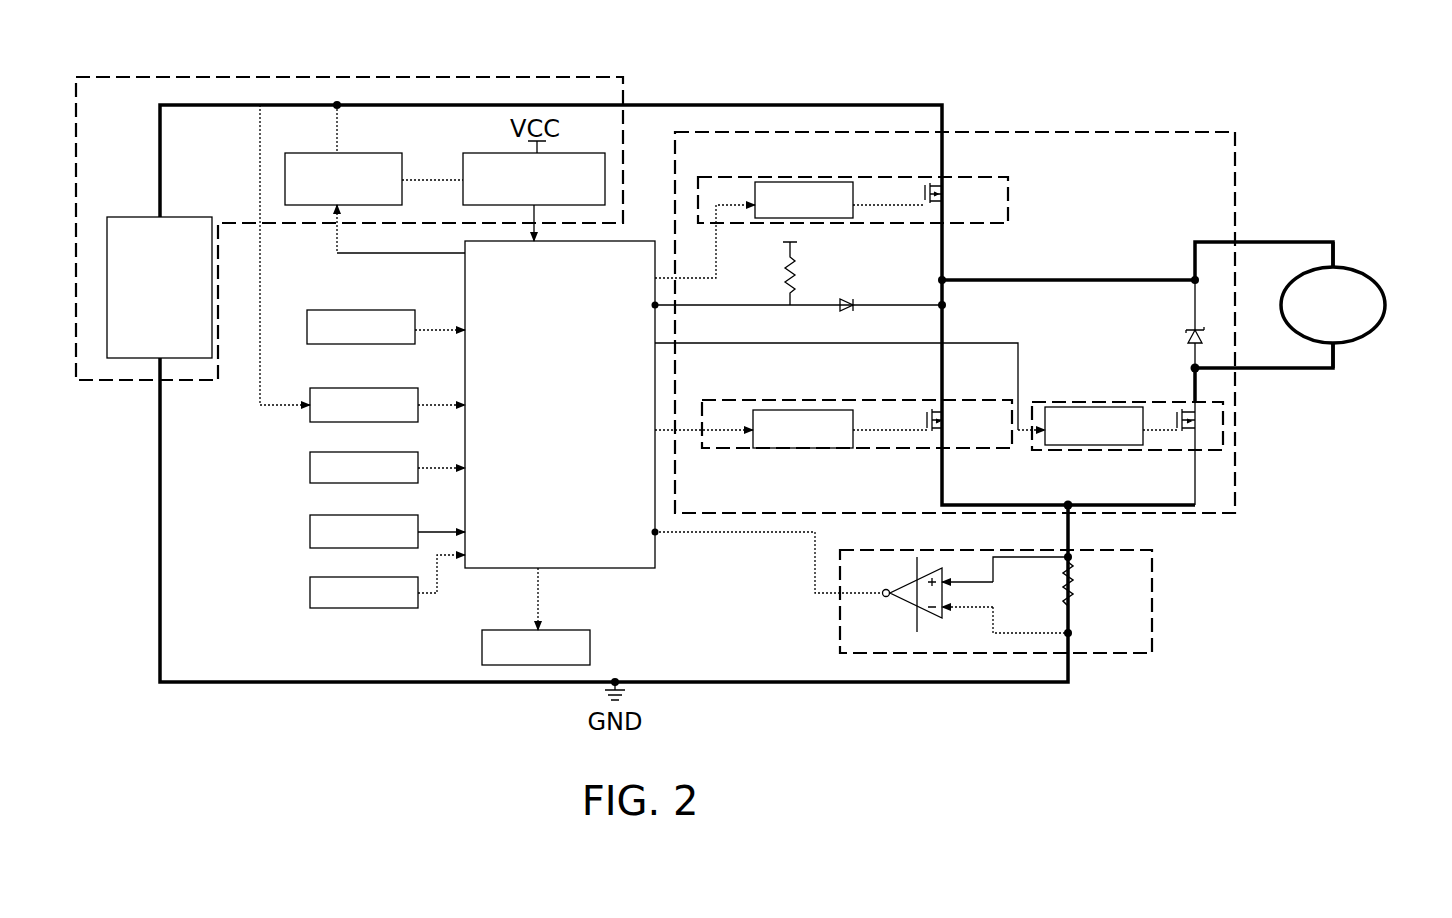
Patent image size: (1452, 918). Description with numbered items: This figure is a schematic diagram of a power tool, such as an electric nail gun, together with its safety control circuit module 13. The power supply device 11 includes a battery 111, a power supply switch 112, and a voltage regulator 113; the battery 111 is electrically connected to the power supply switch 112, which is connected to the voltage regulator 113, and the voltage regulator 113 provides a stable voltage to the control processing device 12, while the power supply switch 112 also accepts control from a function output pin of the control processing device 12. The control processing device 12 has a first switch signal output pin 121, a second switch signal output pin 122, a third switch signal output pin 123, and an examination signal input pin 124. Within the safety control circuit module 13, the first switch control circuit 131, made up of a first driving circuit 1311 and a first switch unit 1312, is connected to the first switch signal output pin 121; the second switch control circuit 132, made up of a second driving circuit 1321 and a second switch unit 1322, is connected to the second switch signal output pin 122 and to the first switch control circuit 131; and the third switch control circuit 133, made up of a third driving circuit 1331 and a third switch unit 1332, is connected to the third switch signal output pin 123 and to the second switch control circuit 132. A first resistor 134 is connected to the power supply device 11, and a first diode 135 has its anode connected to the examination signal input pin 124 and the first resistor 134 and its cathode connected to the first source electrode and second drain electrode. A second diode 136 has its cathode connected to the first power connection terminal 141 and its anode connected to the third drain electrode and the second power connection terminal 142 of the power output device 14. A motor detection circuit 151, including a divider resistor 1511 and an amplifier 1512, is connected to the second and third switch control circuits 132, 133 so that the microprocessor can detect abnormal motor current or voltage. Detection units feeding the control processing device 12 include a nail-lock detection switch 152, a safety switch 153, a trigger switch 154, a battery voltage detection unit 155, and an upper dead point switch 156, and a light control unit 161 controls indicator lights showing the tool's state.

The power supply device 11 is at (237, 75).
The battery 111 is at (159, 287).
The power supply switch 112 is at (343, 179).
The voltage regulator 113 is at (534, 179).
The control processing device 12 is at (560, 404).
The first switch signal output pin 121 is at (681, 247).
The second switch signal output pin 122 is at (680, 430).
The third switch signal output pin 123 is at (826, 381).
The examination signal input pin 124 is at (775, 306).
The safety control circuit module 13 is at (1025, 130).
The first switch control circuit 131 is at (1010, 197).
The first driving circuit 1311 is at (840, 200).
The first switch unit 1312 is at (950, 180).
The second switch control circuit 132 is at (780, 400).
The second driving circuit 1321 is at (840, 429).
The second switch unit 1322 is at (940, 405).
The third switch control circuit 133 is at (1055, 400).
The third driving circuit 1331 is at (1111, 426).
The third switch unit 1332 is at (1228, 403).
The first resistor 134 is at (800, 262).
The first diode 135 is at (852, 300).
The second diode 136 is at (1187, 336).
The power output device 14 is at (1333, 305).
The first power connection terminal 141 is at (1336, 266).
The second power connection terminal 142 is at (1336, 350).
The motor detection circuit 151 is at (1155, 595).
The divider resistor 1511 is at (1080, 558).
The amplifier 1512 is at (925, 570).
The nail-lock detection switch 152 is at (386, 327).
The safety switch 153 is at (387, 467).
The trigger switch 154 is at (387, 531).
The battery voltage detection unit 155 is at (387, 405).
The upper dead point switch 156 is at (387, 581).
The light control unit 161 is at (536, 616).